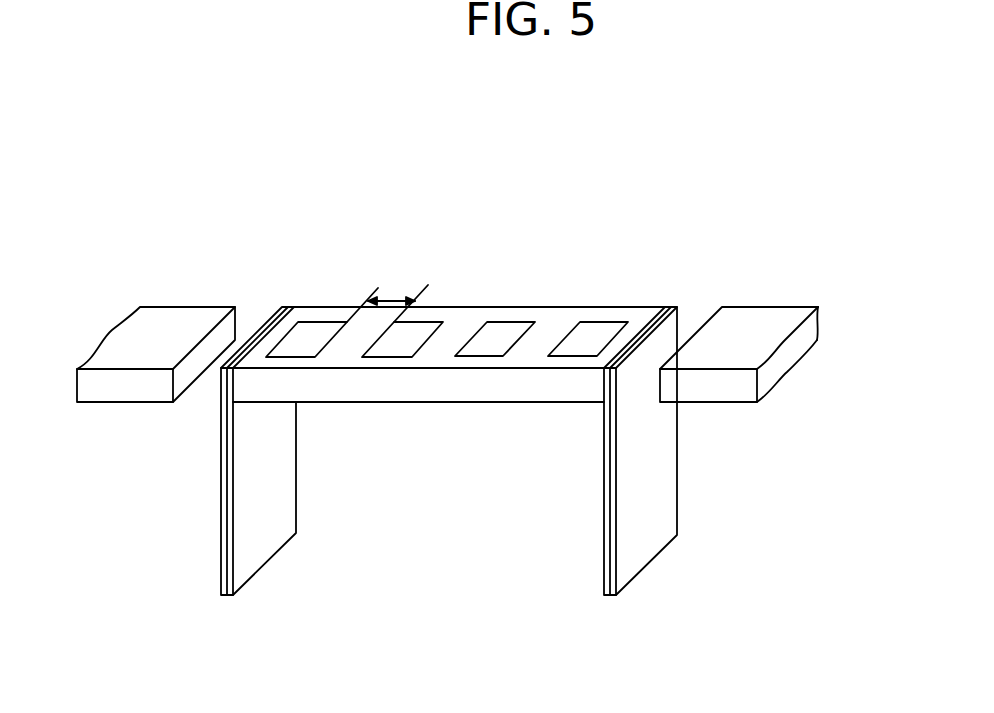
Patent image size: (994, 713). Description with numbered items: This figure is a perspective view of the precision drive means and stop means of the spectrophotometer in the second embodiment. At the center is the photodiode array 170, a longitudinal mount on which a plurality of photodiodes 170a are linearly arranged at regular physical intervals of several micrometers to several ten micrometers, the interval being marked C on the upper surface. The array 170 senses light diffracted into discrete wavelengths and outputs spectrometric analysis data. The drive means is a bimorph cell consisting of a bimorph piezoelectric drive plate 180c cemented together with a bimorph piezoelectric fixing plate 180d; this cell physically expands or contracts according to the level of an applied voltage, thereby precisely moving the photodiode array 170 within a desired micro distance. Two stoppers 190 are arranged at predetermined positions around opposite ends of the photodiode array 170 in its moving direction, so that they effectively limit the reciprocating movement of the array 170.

The photodiode array 170 is at (607, 308).
The photodiodes 170a is at (503, 322).
The bimorph piezoelectric drive plate 180c is at (220, 484).
The bimorph piezoelectric fixing plate 180d is at (285, 545).
The stoppers 190 is at (760, 308).